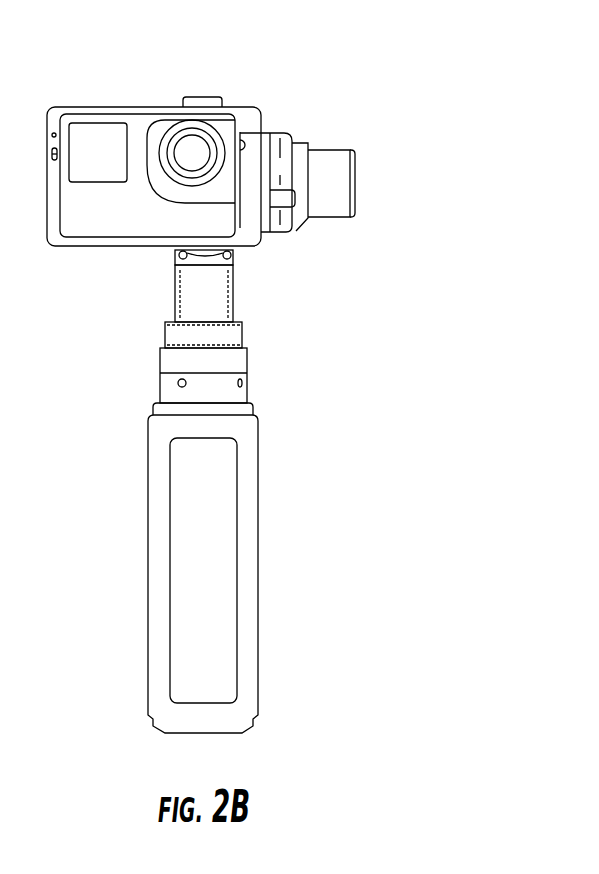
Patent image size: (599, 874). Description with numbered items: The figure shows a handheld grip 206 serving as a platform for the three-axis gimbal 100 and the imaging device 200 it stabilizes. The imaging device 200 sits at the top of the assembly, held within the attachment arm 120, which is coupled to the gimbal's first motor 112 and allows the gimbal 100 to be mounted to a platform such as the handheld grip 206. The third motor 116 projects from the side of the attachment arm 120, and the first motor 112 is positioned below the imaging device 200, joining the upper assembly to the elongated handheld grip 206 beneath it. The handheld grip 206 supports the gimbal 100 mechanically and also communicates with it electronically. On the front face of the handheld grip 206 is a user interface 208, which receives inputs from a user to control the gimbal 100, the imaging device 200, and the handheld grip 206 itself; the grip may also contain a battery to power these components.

The gimbal 100 is at (383, 87).
The first motor 112 is at (243, 332).
The third motor 116 is at (356, 176).
The attachment arm 120 is at (248, 125).
The imaging device 200 is at (170, 226).
The handheld grip 206 is at (272, 485).
The user interface 208 is at (237, 512).